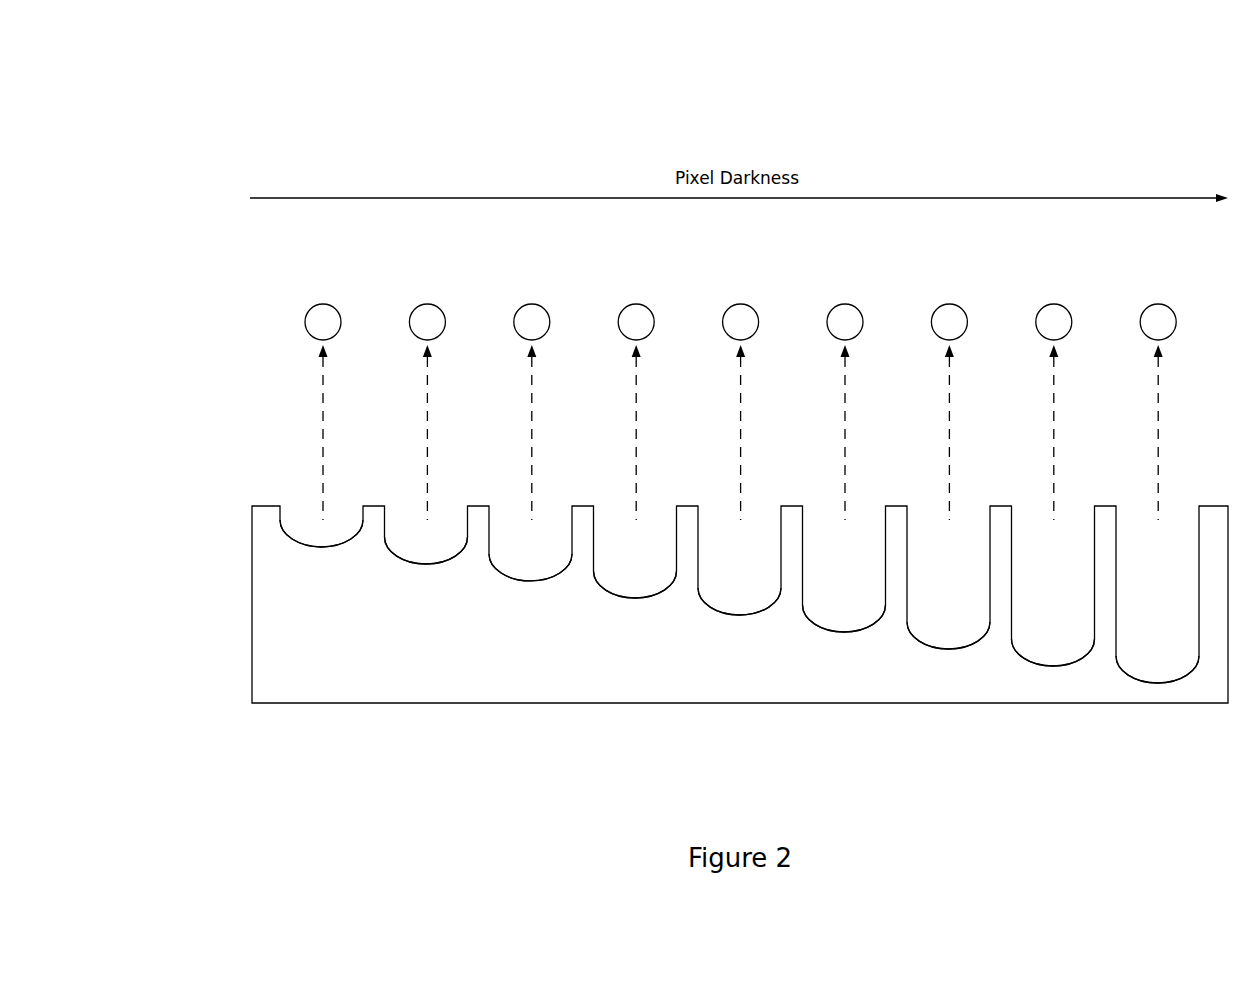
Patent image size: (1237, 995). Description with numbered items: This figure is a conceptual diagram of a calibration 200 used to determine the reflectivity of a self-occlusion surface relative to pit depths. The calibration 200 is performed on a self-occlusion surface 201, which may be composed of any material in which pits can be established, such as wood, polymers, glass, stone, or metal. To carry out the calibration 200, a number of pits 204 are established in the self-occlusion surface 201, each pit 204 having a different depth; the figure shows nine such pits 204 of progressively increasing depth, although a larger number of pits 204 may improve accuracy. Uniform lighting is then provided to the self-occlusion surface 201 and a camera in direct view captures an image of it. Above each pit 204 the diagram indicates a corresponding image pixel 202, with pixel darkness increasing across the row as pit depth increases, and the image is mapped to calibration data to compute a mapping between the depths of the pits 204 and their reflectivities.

The calibration 200 is at (1096, 44).
The self-occlusion surface 201 is at (252, 532).
The pixel 202 is at (718, 379).
The pit 204 is at (739, 657).